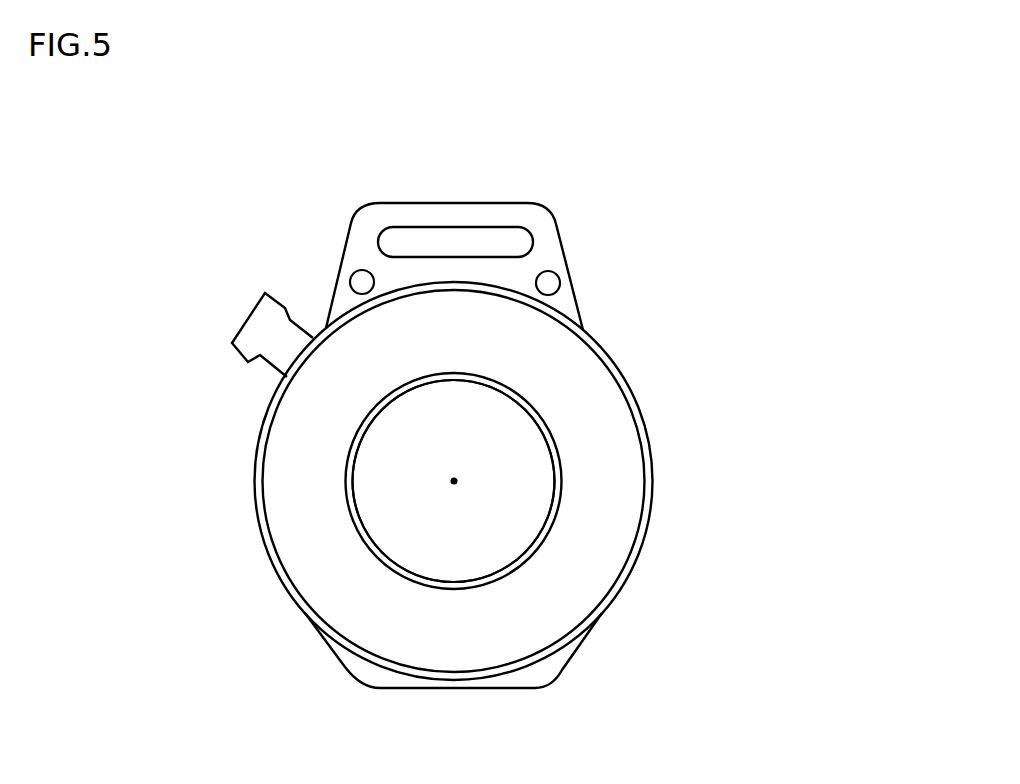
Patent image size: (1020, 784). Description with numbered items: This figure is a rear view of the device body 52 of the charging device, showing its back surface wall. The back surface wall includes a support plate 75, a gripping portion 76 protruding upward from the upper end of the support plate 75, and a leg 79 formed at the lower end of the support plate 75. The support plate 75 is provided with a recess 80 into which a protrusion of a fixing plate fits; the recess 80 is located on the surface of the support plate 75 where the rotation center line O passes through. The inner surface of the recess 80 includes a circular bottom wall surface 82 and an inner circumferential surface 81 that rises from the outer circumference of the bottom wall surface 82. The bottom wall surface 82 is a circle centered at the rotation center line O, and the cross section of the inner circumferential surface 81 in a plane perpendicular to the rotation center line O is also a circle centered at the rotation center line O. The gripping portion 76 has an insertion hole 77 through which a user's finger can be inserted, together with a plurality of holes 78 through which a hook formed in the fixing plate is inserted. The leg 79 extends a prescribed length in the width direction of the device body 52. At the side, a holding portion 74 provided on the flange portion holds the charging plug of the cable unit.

The device body 52 is at (478, 141).
The holding portion 74 is at (257, 332).
The support plate 75 is at (612, 485).
The gripping portion 76 is at (522, 198).
The insertion hole 77 is at (438, 242).
The holes 78 is at (350, 281).
The leg 79 is at (535, 678).
The recess 80 is at (561, 487).
The inner circumferential surface 81 is at (556, 540).
The bottom wall surface 82 is at (485, 523).
The rotation center line O is at (452, 481).